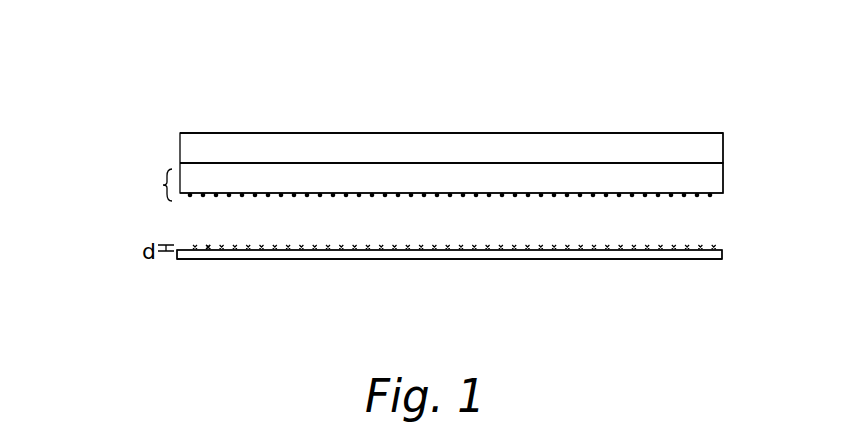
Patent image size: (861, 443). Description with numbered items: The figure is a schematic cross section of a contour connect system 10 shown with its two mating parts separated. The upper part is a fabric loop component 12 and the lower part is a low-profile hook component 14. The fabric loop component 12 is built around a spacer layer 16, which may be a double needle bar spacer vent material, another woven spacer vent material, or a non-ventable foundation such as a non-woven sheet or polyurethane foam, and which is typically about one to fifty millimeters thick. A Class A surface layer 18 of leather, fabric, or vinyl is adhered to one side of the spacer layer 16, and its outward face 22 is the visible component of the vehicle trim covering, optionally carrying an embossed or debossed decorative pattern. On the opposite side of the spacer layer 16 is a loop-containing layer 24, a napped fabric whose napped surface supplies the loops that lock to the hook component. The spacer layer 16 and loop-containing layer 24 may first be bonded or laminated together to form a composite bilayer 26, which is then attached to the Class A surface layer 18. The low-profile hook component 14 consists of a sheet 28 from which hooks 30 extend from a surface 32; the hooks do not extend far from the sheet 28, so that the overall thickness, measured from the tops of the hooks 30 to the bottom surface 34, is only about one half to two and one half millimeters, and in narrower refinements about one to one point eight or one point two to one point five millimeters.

The contour connect system 10 is at (136, 78).
The fabric loop component 12 is at (117, 162).
The low-profile hook component 14 is at (120, 253).
The spacer layer 16 is at (720, 172).
The Class A surface layer 18 is at (720, 138).
The face 22 is at (412, 133).
The loop-containing layer 24 is at (705, 198).
The composite bilayer 26 is at (152, 185).
The sheet 28 is at (705, 259).
The hooks 30 is at (712, 247).
The surface 32 is at (206, 246).
The bottom surface 34 is at (242, 260).